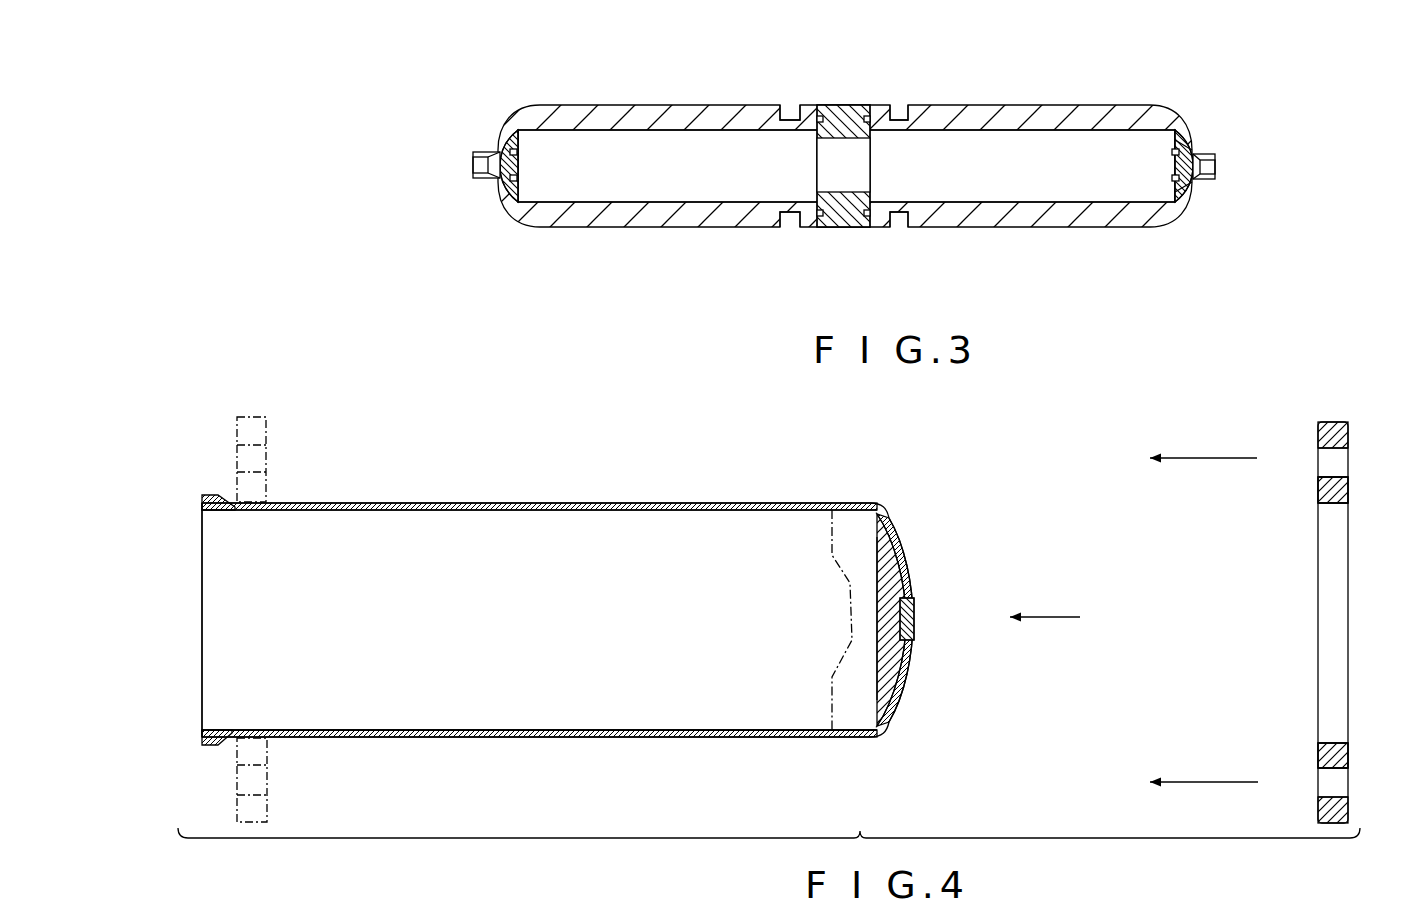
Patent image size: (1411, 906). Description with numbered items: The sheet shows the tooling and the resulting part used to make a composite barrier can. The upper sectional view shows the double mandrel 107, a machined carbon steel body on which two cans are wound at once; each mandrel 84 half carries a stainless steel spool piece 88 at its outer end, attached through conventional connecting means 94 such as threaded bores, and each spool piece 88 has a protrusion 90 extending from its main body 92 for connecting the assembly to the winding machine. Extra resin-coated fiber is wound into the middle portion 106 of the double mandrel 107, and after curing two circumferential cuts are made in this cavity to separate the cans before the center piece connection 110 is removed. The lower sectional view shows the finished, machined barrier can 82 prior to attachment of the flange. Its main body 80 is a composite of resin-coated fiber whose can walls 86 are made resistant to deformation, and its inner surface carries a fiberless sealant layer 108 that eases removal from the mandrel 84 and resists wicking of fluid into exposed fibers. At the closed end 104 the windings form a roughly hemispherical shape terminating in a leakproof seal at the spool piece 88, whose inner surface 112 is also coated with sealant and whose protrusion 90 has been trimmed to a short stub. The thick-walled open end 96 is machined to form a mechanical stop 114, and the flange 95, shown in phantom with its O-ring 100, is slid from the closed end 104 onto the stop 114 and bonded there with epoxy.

In FIG. 4, the main body 80 is at (622, 502).
In FIG. 4, the barrier can 82 is at (424, 477).
In FIG. 3, the mandrel 84 is at (693, 104).
In FIG. 4, the can walls 86 is at (922, 611).
In FIG. 3, the spool piece 88 is at (1192, 150).
In FIG. 4, the spool piece 88 is at (912, 597).
In FIG. 3, the protrusion 90 is at (480, 152).
In FIG. 3, the main body of the spool piece 92 is at (1188, 199).
In FIG. 4, the main body of the spool piece 92 is at (910, 648).
In FIG. 4, the connecting means 94 is at (876, 589).
In FIG. 4, the flange 95 is at (253, 411).
In FIG. 4, the open end 96 is at (191, 591).
In FIG. 4, the O-ring 100 is at (1318, 490).
In FIG. 4, the closed end 104 is at (984, 612).
In FIG. 3, the middle portion 106 is at (790, 109).
In FIG. 3, the double mandrel 107 is at (636, 76).
In FIG. 4, the sealant layer 108 is at (403, 730).
In FIG. 3, the center piece connection 110 is at (848, 118).
In FIG. 4, the inner surface of the spool piece 112 is at (872, 628).
In FIG. 4, the mechanical stop 114 is at (216, 496).